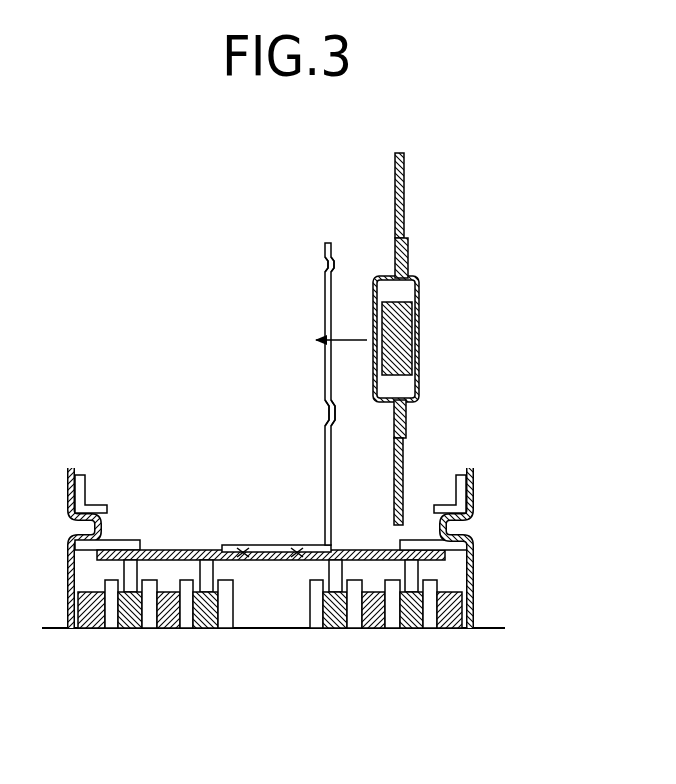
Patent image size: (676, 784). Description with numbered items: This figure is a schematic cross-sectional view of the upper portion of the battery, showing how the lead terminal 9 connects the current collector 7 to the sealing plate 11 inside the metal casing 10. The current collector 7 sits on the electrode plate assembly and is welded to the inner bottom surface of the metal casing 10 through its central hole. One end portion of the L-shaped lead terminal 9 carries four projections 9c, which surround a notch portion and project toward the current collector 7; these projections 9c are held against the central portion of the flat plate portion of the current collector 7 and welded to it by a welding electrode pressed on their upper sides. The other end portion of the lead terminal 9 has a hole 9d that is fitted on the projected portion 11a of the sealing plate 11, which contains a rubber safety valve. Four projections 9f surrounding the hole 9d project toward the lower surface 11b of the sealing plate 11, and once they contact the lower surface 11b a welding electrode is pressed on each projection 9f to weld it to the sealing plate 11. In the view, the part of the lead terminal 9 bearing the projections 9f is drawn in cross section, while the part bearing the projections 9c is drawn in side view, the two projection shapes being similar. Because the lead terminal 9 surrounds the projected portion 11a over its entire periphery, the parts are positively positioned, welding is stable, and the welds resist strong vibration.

The current collector 7 is at (178, 548).
The lead terminal 9 is at (310, 493).
The projections 9c is at (297, 560).
The hole 9d is at (325, 322).
The projections 9f is at (327, 413).
The metal casing 10 is at (474, 471).
The sealing plate 11 is at (426, 283).
The projected portion 11a is at (374, 300).
The lower surface 11b is at (394, 422).